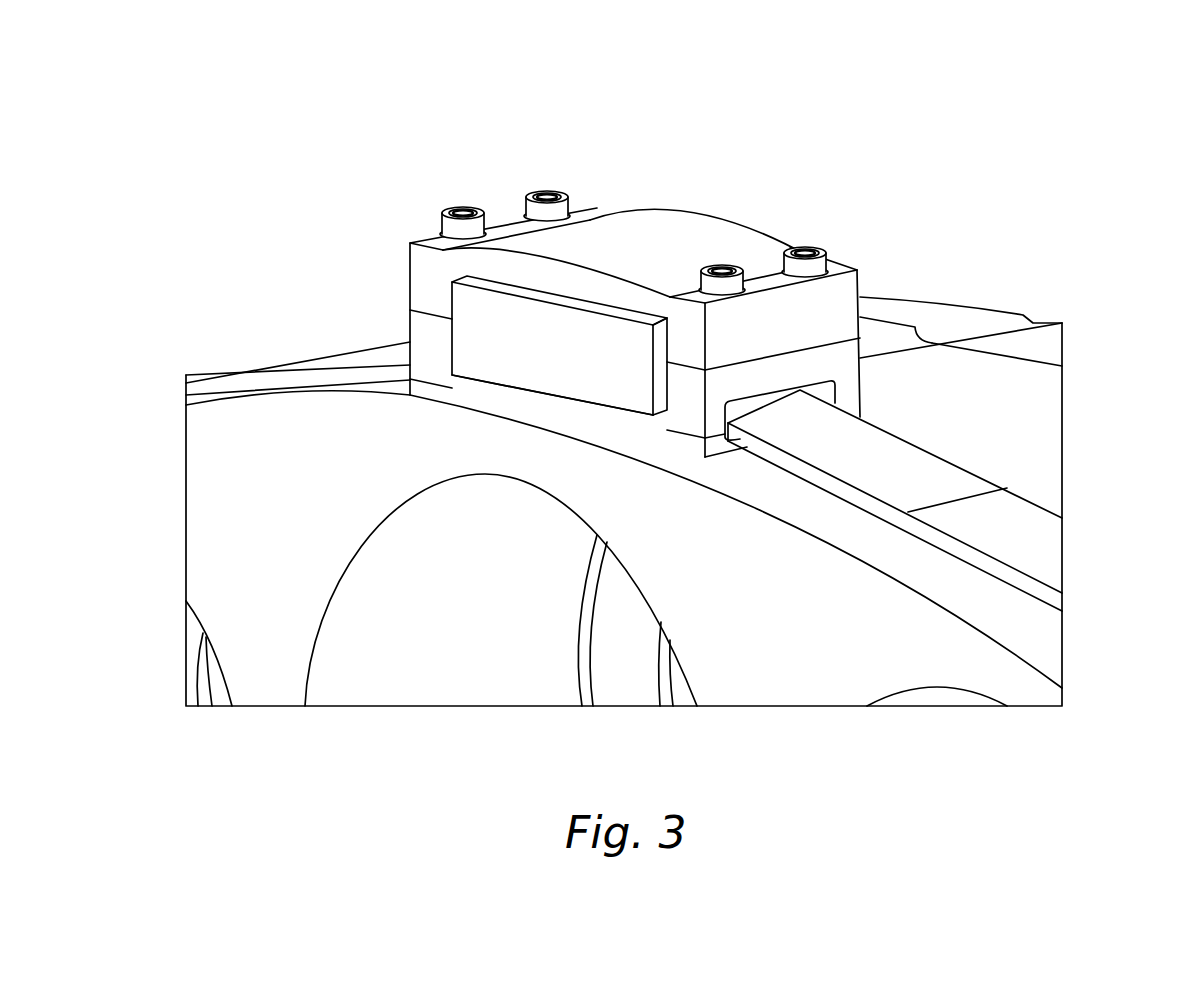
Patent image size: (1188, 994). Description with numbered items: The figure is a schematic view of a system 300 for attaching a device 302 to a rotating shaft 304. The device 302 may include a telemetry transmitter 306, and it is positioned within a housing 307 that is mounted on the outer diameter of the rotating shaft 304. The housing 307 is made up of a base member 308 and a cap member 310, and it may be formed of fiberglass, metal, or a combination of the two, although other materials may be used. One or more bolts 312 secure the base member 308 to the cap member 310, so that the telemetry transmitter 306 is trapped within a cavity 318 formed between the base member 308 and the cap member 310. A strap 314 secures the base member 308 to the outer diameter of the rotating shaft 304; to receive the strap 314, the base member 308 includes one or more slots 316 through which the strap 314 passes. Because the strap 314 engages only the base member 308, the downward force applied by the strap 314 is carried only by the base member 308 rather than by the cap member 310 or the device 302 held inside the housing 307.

The system 300 is at (1077, 75).
The device 302 is at (559, 345).
The rotating shaft 304 is at (930, 316).
The telemetry transmitter 306 is at (552, 348).
The housing 307 is at (675, 350).
The base member 308 is at (690, 445).
The cap member 310 is at (638, 232).
The bolts 312 is at (547, 189).
The strap 314 is at (913, 467).
The slots 316 is at (837, 384).
The cavity 318 is at (514, 389).